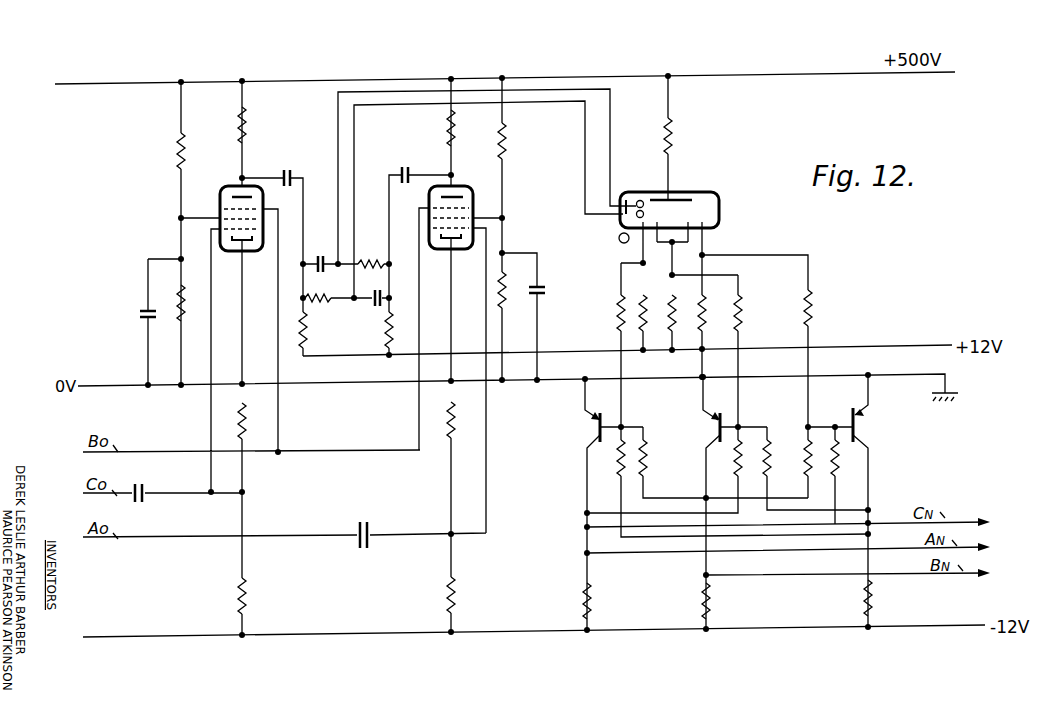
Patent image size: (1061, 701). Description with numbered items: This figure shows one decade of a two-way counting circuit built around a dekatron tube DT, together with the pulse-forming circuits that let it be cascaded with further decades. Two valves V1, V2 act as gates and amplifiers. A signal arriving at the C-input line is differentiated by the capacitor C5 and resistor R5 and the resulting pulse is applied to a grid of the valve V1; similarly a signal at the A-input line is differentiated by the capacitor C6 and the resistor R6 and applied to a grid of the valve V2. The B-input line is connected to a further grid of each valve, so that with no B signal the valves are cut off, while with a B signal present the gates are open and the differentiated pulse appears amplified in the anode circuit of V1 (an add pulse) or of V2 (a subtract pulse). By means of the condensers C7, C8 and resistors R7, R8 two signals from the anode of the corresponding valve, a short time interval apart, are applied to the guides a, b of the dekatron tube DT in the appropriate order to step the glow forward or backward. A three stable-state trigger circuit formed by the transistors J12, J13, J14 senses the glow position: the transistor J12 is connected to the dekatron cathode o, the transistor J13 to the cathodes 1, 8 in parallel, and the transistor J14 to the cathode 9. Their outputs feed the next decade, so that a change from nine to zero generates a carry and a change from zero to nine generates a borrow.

The valve V1 is at (223, 186).
The valve V2 is at (467, 190).
The capacitor C5 is at (139, 500).
The capacitor C6 is at (365, 548).
The condenser C7 is at (322, 255).
The condenser C8 is at (362, 304).
The resistor R5 is at (248, 600).
The resistor R6 is at (456, 596).
The resistor R7 is at (373, 258).
The resistor R8 is at (314, 303).
The dekatron tube DT is at (681, 174).
The guide a is at (637, 200).
The guide b is at (643, 210).
The dekatron cathode o is at (640, 225).
The dekatron cathode 1 is at (662, 226).
The dekatron cathode 8 is at (683, 226).
The dekatron cathode 9 is at (703, 233).
The transistor J12 is at (596, 428).
The transistor J13 is at (714, 428).
The transistor J14 is at (858, 425).